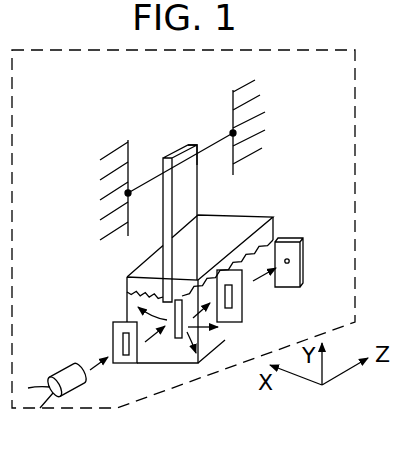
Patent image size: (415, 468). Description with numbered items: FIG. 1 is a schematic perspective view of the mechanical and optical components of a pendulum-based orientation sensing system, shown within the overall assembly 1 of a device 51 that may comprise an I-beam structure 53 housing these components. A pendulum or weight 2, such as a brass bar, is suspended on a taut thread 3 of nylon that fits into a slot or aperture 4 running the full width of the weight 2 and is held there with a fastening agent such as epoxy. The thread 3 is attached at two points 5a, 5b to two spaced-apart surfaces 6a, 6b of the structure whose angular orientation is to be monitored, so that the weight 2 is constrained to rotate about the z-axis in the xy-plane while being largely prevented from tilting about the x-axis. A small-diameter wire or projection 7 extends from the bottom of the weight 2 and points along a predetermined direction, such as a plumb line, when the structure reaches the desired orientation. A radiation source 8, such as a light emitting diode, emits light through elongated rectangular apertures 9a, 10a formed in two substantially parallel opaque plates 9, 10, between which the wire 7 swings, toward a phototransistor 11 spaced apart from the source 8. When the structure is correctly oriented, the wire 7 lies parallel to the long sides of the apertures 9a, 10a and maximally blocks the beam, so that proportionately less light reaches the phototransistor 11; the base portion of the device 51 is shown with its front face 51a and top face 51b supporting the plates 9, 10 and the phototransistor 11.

The measuring apparatus 1 is at (355, 151).
The pendulum or weight 2 is at (182, 224).
The taut thread 3 is at (152, 180).
The slot or aperture 4 is at (190, 163).
The attachment point 5a is at (128, 192).
The attachment point 5b is at (233, 133).
The wall 6a is at (116, 148).
The wall 6b is at (242, 87).
The wire or projection 7 is at (180, 338).
The radiation source 8 is at (71, 370).
The plate 9 is at (117, 362).
The aperture 9a is at (125, 341).
The plate 10 is at (237, 322).
The aperture 10a is at (229, 298).
The phototransistor 11 is at (298, 270).
The device 51 is at (218, 282).
The front face of base 51a is at (177, 348).
The top face of base 51b is at (262, 193).
The I-beam structure 53 is at (127, 292).